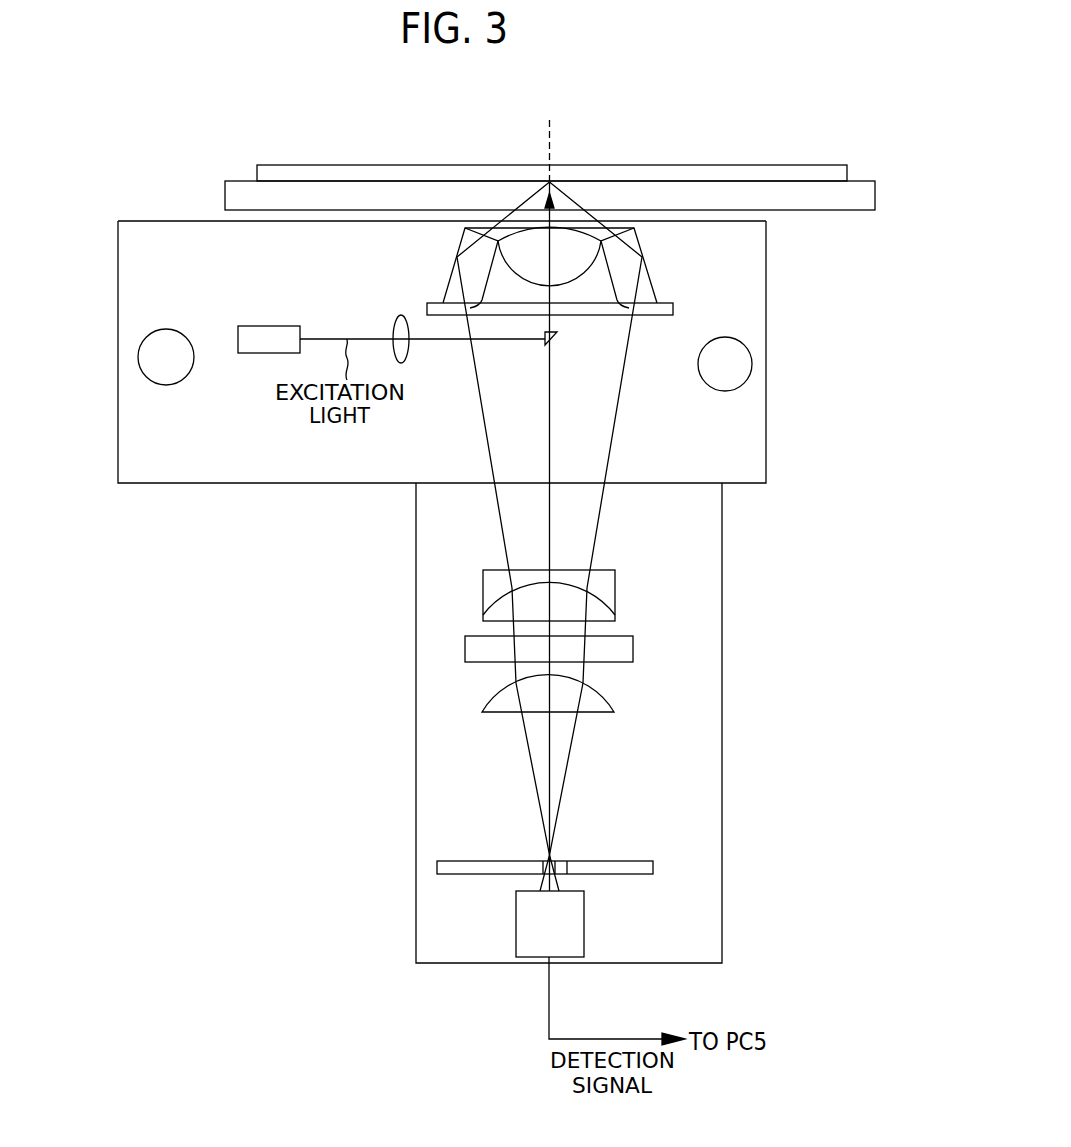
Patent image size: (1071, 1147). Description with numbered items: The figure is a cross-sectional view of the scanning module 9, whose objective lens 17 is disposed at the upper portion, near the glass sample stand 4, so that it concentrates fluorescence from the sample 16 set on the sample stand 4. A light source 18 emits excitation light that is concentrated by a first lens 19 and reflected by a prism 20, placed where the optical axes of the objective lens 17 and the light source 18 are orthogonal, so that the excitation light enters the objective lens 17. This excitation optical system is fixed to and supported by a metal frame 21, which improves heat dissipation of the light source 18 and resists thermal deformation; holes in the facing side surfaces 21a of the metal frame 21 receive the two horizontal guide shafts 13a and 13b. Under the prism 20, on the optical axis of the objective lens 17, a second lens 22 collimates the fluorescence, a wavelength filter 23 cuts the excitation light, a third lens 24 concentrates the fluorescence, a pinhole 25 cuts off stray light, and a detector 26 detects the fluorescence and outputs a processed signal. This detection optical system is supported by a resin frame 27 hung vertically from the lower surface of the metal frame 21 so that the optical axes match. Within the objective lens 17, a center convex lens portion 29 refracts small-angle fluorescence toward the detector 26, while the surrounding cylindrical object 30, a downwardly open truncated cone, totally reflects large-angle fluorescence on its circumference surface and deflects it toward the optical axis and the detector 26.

The sample stand 4 is at (225, 197).
The scanning module 9 is at (355, 537).
The guide shaft 13a is at (153, 360).
The guide shaft 13b is at (743, 366).
The sample 16 is at (327, 165).
The objective lens 17 is at (536, 271).
The light source 18 is at (266, 326).
The first lens 19 is at (395, 322).
The prism 20 is at (558, 333).
The metal frame 21 is at (118, 435).
The side surface 21a is at (142, 275).
The second lens 22 is at (615, 590).
The wavelength filter 23 is at (633, 648).
The third lens 24 is at (612, 705).
The pinhole 25 is at (653, 866).
The detector 26 is at (584, 922).
The resin frame 27 is at (416, 747).
The convex lens portion 29 is at (596, 263).
The cylindrical object 30 is at (639, 245).